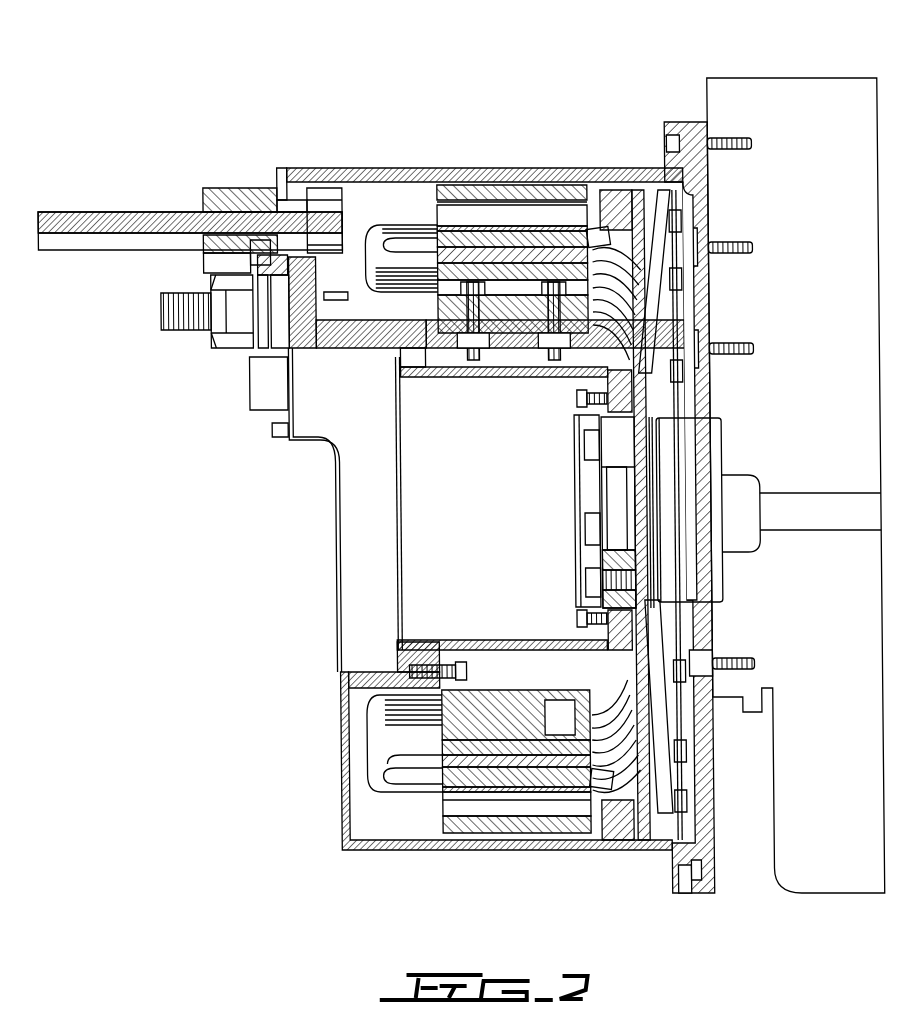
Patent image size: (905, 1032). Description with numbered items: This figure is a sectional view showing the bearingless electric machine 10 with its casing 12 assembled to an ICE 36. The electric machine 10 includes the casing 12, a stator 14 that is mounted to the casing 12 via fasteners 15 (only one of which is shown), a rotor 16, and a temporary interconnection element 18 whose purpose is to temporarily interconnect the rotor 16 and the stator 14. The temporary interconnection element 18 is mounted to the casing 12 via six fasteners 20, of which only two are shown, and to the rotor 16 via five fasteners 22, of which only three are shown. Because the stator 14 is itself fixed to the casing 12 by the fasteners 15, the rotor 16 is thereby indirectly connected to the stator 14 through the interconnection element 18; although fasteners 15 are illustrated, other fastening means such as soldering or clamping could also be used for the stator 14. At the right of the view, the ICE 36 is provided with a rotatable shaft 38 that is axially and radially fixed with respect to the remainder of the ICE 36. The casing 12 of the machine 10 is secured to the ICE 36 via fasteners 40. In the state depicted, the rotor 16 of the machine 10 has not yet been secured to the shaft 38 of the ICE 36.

The bearingless electric machine 10 is at (210, 108).
The casing 12 is at (490, 852).
The stator 14 is at (510, 335).
The fasteners 15 is at (457, 662).
The rotor 16 is at (678, 372).
The temporary interconnection element 18 is at (577, 487).
The fasteners 20 is at (573, 398).
The fasteners 22 is at (587, 445).
The ICE 36 is at (795, 76).
The rotatable shaft 38 is at (710, 447).
The fasteners 40 is at (752, 149).